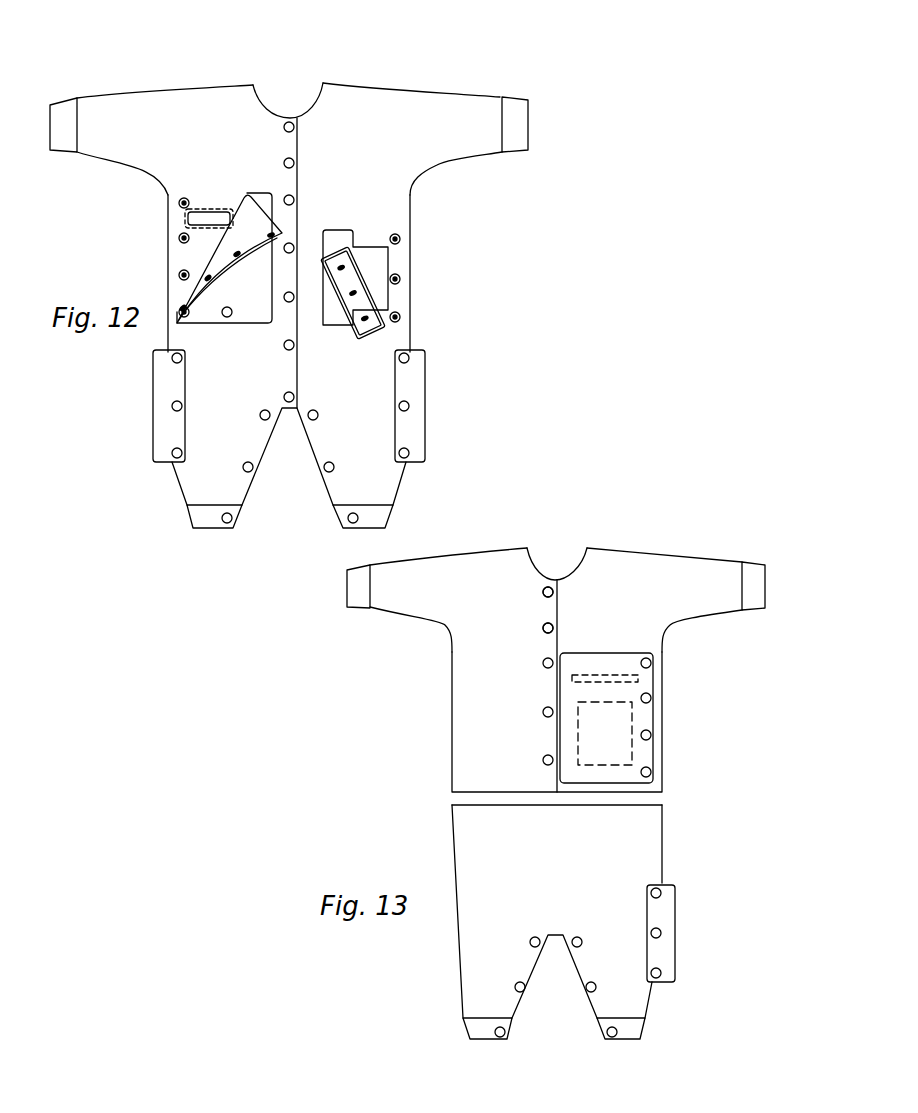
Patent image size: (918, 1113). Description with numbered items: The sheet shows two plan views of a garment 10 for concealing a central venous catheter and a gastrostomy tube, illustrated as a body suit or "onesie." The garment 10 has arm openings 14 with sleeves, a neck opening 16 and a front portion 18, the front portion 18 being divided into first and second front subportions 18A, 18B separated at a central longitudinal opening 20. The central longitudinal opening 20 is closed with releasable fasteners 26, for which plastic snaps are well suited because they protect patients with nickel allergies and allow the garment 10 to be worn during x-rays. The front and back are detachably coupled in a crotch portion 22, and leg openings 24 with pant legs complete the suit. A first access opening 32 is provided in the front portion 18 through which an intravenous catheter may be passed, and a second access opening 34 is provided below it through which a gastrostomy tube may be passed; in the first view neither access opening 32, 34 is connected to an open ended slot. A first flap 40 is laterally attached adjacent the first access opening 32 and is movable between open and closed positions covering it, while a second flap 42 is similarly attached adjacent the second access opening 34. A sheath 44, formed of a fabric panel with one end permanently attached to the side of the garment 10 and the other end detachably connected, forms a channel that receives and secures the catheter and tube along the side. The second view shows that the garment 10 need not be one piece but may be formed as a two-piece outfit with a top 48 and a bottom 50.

In FIG. 12, the garment 10 is at (547, 89).
In FIG. 13, the garment 10 is at (728, 680).
In FIG. 12, the arm openings 14 is at (50, 127).
In FIG. 13, the arm openings 14 is at (345, 587).
In FIG. 12, the neck opening 16 is at (266, 96).
In FIG. 13, the neck opening 16 is at (537, 570).
In FIG. 12, the front portion 18 is at (412, 267).
In FIG. 13, the front portion 18 is at (430, 737).
In FIG. 12, the first front subportion 18A is at (402, 147).
In FIG. 13, the first front subportion 18A is at (658, 588).
In FIG. 12, the second front subportion 18B is at (187, 143).
In FIG. 13, the second front subportion 18B is at (475, 597).
In FIG. 12, the central longitudinal opening 20 is at (297, 362).
In FIG. 12, the crotch portion 22 is at (292, 408).
In FIG. 13, the crotch portion 22 is at (557, 937).
In FIG. 12, the leg openings 24 is at (218, 530).
In FIG. 13, the leg openings 24 is at (470, 1042).
In FIG. 12, the releasable fasteners 26 is at (295, 128).
In FIG. 13, the releasable fasteners 26 is at (554, 592).
In FIG. 12, the first access opening 32 is at (212, 217).
In FIG. 13, the first access opening 32 is at (617, 672).
In FIG. 12, the second access opening 34 is at (375, 260).
In FIG. 13, the second access opening 34 is at (602, 747).
In FIG. 12, the first flap 40 is at (203, 323).
In FIG. 12, the second flap 42 is at (343, 313).
In FIG. 12, the sheath 44 is at (153, 378).
In FIG. 13, the sheath 44 is at (676, 924).
In FIG. 13, the top 48 is at (450, 667).
In FIG. 13, the bottom 50 is at (453, 958).